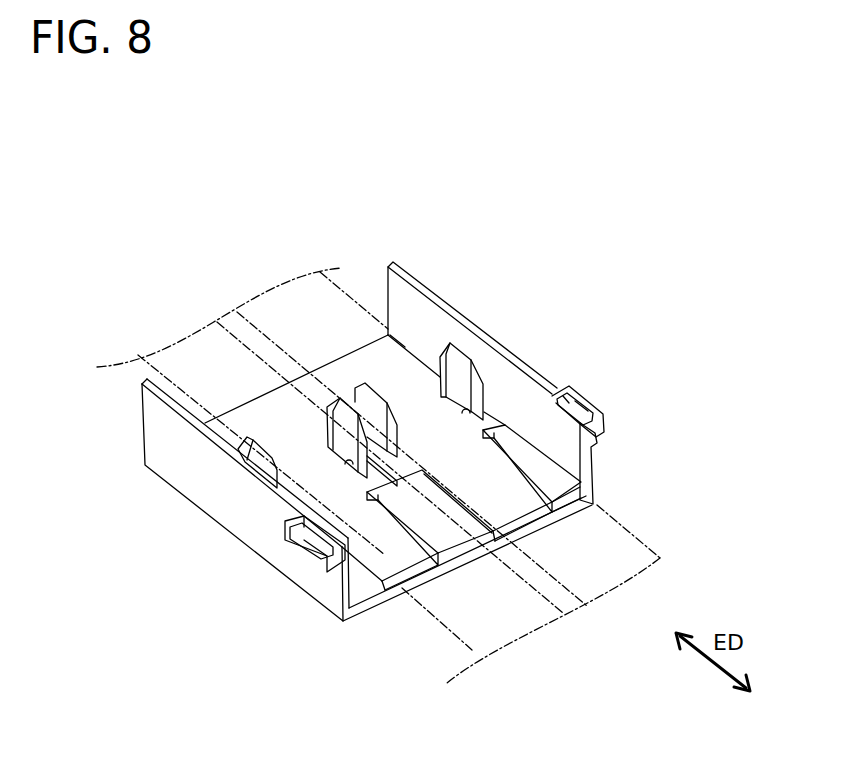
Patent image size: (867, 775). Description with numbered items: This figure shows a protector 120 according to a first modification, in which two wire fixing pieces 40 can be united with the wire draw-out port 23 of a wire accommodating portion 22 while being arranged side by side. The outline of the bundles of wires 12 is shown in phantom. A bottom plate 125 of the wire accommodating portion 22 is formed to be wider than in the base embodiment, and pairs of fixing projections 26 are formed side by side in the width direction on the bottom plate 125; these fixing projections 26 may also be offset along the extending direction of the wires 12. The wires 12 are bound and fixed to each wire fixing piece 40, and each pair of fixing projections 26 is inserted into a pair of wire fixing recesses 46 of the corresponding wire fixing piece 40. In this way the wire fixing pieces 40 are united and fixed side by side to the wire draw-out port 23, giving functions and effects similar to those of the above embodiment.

The protector 120 is at (407, 253).
The wire accommodating portion 22 is at (497, 350).
The wire draw-out port 23 is at (595, 494).
The bottom plate 125 is at (408, 355).
The wire fixing piece 40 is at (531, 490).
The fixing projection 26 is at (440, 361).
The wire fixing recess 46 is at (349, 466).
The wire 12 is at (650, 533).